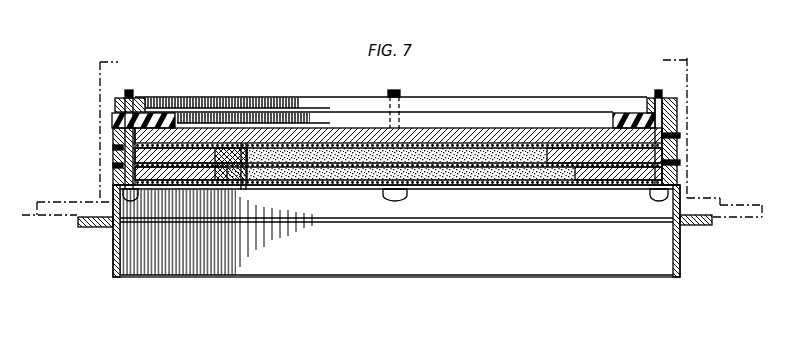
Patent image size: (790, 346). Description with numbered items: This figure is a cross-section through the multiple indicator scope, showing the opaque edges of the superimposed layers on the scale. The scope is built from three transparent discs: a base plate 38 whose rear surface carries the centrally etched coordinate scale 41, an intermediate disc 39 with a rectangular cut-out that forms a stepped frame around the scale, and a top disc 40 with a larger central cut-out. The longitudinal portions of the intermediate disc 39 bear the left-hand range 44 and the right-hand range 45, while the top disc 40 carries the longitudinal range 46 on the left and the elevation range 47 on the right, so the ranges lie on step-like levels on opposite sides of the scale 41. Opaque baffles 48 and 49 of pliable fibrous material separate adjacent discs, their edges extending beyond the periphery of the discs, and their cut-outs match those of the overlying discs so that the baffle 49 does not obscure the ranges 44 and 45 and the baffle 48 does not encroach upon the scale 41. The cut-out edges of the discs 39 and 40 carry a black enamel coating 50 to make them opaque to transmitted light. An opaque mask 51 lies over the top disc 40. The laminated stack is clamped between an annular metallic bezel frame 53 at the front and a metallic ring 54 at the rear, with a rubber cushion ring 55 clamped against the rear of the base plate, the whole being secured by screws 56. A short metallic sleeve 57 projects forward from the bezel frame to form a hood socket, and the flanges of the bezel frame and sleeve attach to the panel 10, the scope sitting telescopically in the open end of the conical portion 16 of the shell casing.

The panel 10 is at (39, 191).
The truncated conical portion 16 is at (100, 80).
The base plate 38 is at (310, 135).
The intermediate disc 39 is at (113, 153).
The top disc 40 is at (113, 177).
The coordinate scale 41 is at (343, 128).
The left-hand range 44 is at (222, 163).
The right-hand range 45 is at (563, 145).
The longitudinal range 46 is at (200, 163).
The elevation range 47 is at (583, 183).
The opaque baffle 48 is at (113, 147).
The opaque baffle 49 is at (113, 165).
The black enamel coating 50 is at (246, 195).
The opaque mask 51 is at (113, 238).
The bezel frame 53 is at (682, 200).
The metallic ring 54 is at (137, 98).
The rubber cushion ring 55 is at (157, 98).
The screws 56 is at (128, 91).
The metallic sleeve 57 is at (113, 257).